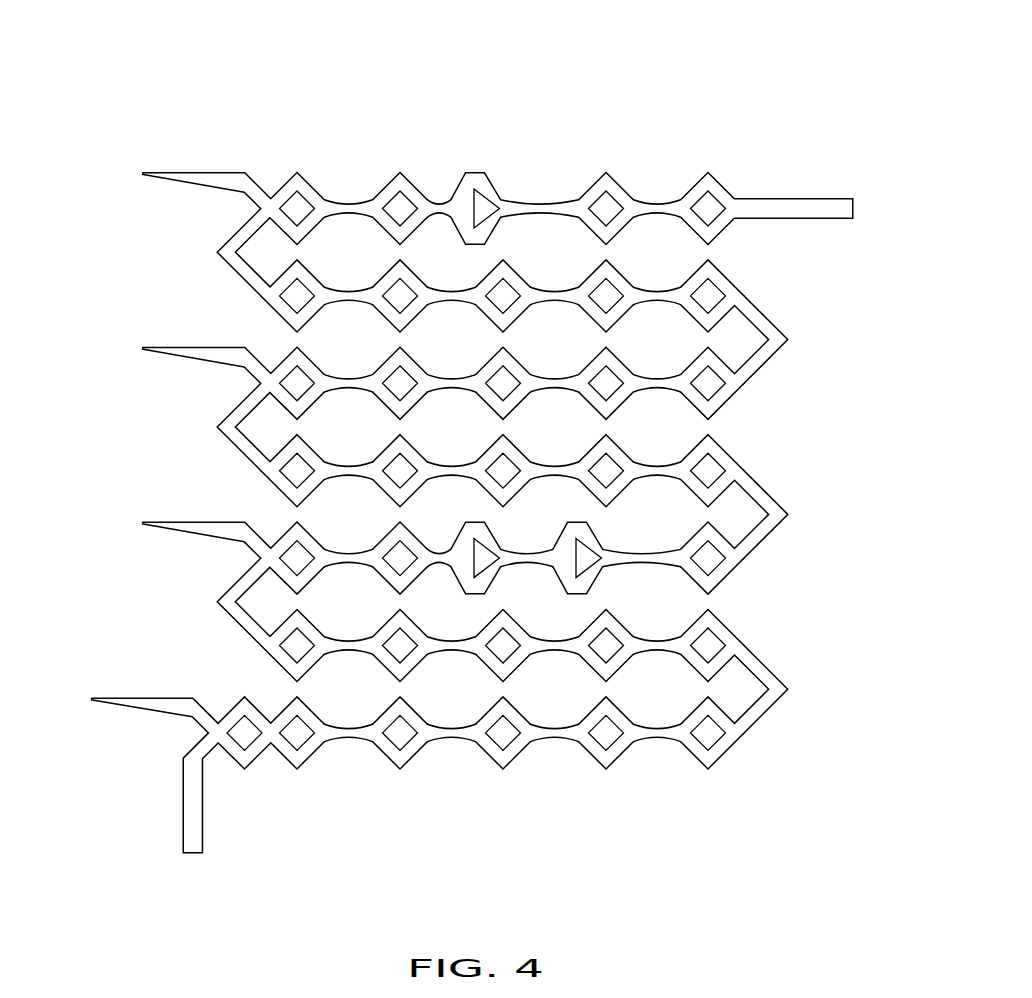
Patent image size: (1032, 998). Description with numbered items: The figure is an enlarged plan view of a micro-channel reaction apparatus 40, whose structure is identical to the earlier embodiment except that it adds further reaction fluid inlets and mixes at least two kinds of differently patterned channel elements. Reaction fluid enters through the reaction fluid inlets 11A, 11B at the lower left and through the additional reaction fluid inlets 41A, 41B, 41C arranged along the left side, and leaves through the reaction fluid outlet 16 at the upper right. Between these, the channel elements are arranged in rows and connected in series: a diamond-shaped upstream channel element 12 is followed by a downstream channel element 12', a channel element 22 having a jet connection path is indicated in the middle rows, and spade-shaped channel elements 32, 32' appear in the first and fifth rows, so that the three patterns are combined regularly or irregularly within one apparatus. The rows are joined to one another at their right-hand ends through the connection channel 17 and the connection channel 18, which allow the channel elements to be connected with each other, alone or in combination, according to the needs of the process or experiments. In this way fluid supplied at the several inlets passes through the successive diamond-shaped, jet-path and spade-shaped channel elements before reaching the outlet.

The micro-channel reaction apparatus 40 is at (79, 34).
The upstream channel element 12 is at (717, 153).
The downstream channel element 12' is at (657, 158).
The spade-shaped channel element 32 is at (476, 474).
The spade-shaped channel element 32' is at (580, 696).
The channel element 22 is at (363, 351).
The reaction fluid outlet 16 is at (853, 209).
The connection channel 17 is at (788, 340).
The connection channel 18 is at (788, 514).
The reaction fluid inlet 41A is at (118, 188).
The reaction fluid inlet 41B is at (118, 363).
The reaction fluid inlet 41C is at (118, 538).
The reaction fluid inlet 11A is at (196, 866).
The reaction fluid inlet 11B is at (79, 699).